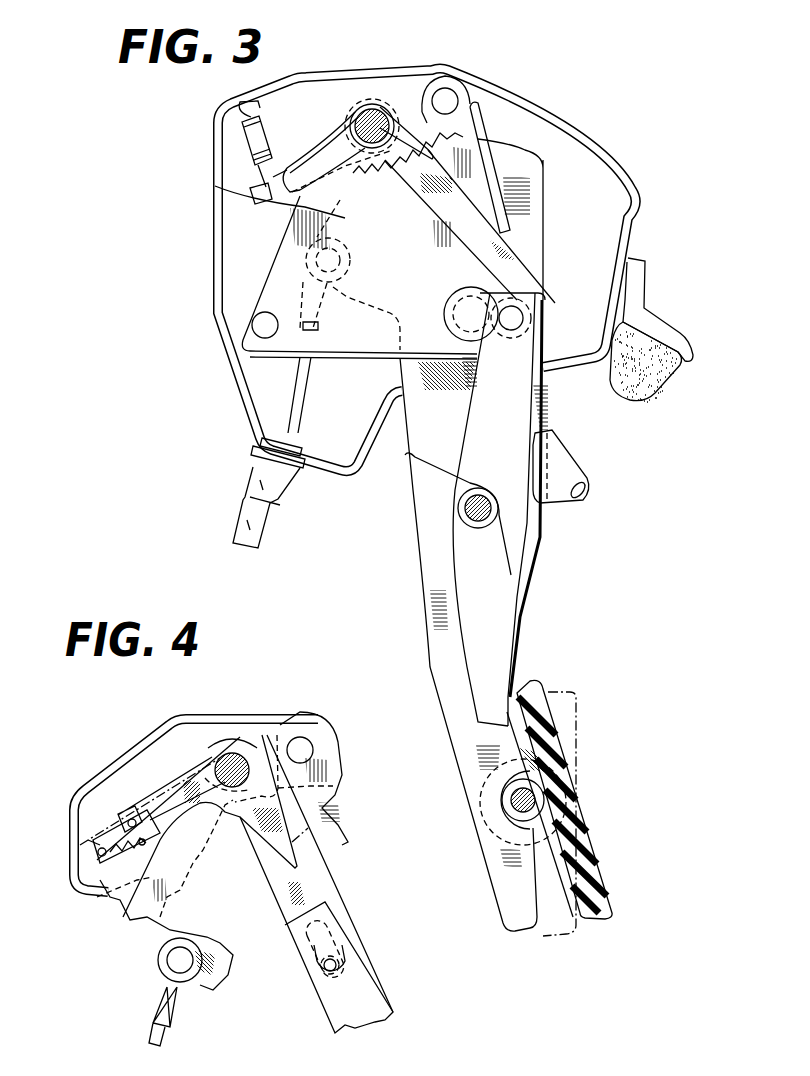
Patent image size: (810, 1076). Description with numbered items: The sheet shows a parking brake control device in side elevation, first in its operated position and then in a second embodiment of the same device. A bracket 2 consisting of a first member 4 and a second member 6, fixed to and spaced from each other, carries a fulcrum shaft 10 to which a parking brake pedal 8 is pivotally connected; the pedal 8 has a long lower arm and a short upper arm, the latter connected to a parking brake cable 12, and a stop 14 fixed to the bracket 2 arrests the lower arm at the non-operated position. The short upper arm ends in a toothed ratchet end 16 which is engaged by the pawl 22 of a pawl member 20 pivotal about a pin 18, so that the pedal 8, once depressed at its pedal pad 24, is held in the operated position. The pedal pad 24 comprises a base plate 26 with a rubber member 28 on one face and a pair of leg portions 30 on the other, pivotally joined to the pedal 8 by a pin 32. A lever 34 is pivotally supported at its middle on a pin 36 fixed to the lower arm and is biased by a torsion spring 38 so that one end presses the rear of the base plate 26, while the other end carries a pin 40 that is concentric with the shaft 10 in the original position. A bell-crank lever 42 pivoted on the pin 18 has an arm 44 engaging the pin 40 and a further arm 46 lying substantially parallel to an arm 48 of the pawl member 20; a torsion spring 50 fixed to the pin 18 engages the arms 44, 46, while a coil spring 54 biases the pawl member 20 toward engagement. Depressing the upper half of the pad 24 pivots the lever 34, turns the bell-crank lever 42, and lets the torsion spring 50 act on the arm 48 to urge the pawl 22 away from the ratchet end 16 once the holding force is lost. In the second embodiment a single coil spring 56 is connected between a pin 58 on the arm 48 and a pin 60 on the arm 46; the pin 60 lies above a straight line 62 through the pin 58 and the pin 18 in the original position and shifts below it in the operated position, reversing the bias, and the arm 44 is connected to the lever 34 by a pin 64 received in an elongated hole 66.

In FIG. 3, the bracket 2 is at (622, 138).
In FIG. 3, the first member 4 is at (620, 205).
In FIG. 4, the first member 4 is at (196, 805).
In FIG. 3, the second member 6 is at (477, 173).
In FIG. 3, the parking brake pedal 8 is at (445, 683).
In FIG. 3, the fulcrum shaft 10 is at (450, 312).
In FIG. 3, the parking brake cable 12 is at (298, 406).
In FIG. 3, the stop 14 is at (640, 390).
In FIG. 3, the ratchet end 16 is at (478, 137).
In FIG. 4, the ratchet end 16 is at (133, 877).
In FIG. 3, the pin 18 is at (372, 120).
In FIG. 4, the pin 18 is at (233, 765).
In FIG. 3, the pawl member 20 is at (438, 138).
In FIG. 4, the pawl member 20 is at (277, 722).
In FIG. 3, the pawl 22 is at (432, 140).
In FIG. 3, the pedal pad 24 is at (600, 786).
In FIG. 3, the base plate 26 is at (560, 862).
In FIG. 3, the rubber member 28 is at (594, 870).
In FIG. 3, the leg portions 30 is at (483, 795).
In FIG. 3, the pin 32 is at (515, 806).
In FIG. 3, the lever 34 is at (497, 597).
In FIG. 4, the lever 34 is at (337, 1000).
In FIG. 3, the pin 36 is at (483, 510).
In FIG. 3, the torsion spring 38 is at (430, 470).
In FIG. 3, the pin 40 is at (515, 319).
In FIG. 3, the bell-crank lever 42 is at (472, 193).
In FIG. 4, the bell-crank lever 42 is at (260, 866).
In FIG. 3, the arm 44 is at (520, 263).
In FIG. 4, the arm 44 is at (307, 890).
In FIG. 3, the arm 46 is at (262, 208).
In FIG. 4, the arm 46 is at (127, 817).
In FIG. 3, the arm 48 is at (256, 195).
In FIG. 4, the arm 48 is at (93, 843).
In FIG. 3, the torsion spring 50 is at (405, 132).
In FIG. 3, the coil spring 54 is at (240, 140).
In FIG. 4, the coil spring 56 is at (97, 840).
In FIG. 4, the pin 58 is at (160, 833).
In FIG. 4, the pin 60 is at (132, 818).
In FIG. 4, the straight line 62 is at (193, 787).
In FIG. 4, the pin 64 is at (324, 966).
In FIG. 4, the elongated hole 66 is at (320, 940).